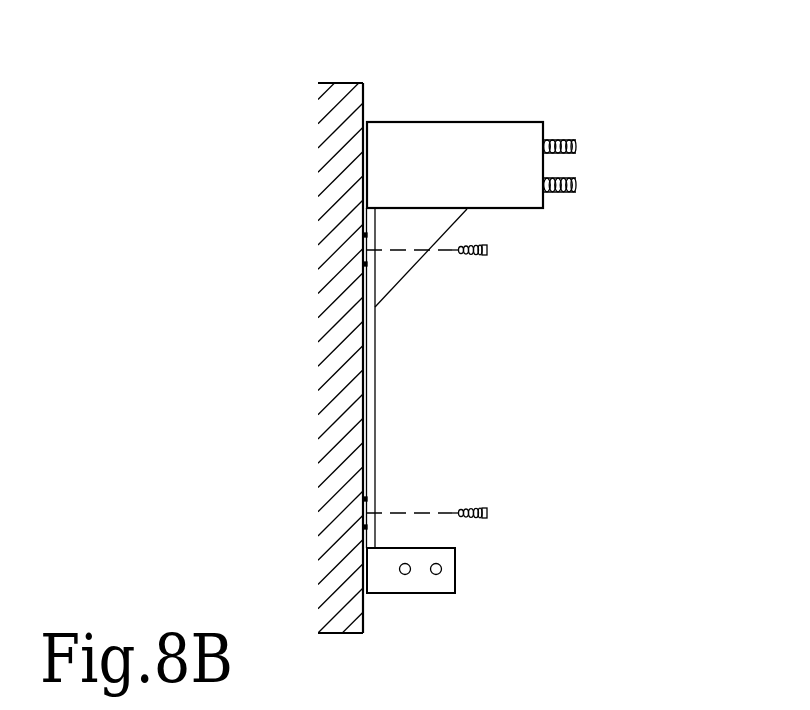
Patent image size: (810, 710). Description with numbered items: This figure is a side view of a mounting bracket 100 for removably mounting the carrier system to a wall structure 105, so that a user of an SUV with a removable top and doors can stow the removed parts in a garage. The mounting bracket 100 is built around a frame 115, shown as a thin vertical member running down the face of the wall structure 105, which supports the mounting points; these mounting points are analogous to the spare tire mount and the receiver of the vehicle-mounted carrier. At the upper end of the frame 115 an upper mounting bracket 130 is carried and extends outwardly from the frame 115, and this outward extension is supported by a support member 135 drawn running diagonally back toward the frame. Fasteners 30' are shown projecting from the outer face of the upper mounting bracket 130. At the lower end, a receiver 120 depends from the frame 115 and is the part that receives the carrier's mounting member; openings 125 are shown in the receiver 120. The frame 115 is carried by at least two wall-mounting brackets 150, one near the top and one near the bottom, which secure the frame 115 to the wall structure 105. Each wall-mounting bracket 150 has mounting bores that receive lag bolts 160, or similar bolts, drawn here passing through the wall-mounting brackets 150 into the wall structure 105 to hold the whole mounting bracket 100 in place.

The mounting bracket 100 is at (675, 58).
The wall structure 105 is at (364, 94).
The frame 115 is at (376, 385).
The receiver 120 is at (440, 548).
The mounting holes 125 is at (406, 575).
The upper mounting bracket 130 is at (513, 122).
The support member 135 is at (467, 210).
The wall-mounting brackets 150 is at (366, 240).
The lag bolts 160 is at (487, 250).
The fasteners 30' is at (609, 137).